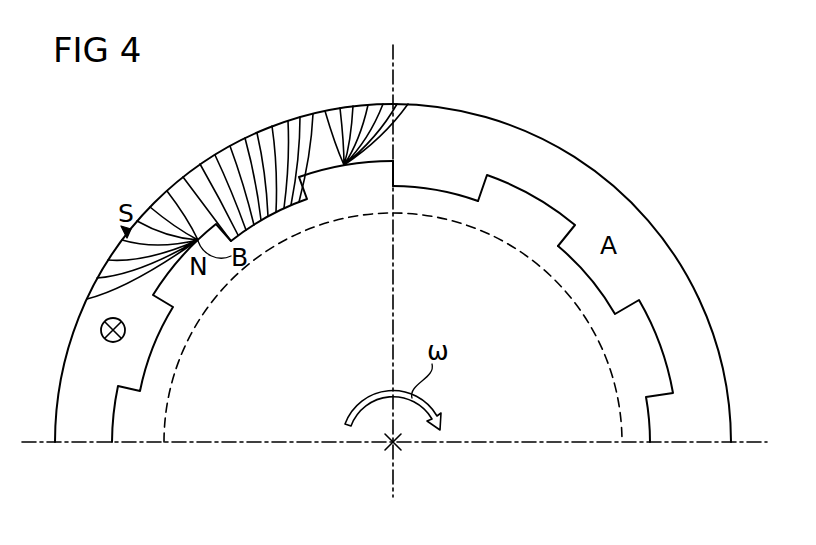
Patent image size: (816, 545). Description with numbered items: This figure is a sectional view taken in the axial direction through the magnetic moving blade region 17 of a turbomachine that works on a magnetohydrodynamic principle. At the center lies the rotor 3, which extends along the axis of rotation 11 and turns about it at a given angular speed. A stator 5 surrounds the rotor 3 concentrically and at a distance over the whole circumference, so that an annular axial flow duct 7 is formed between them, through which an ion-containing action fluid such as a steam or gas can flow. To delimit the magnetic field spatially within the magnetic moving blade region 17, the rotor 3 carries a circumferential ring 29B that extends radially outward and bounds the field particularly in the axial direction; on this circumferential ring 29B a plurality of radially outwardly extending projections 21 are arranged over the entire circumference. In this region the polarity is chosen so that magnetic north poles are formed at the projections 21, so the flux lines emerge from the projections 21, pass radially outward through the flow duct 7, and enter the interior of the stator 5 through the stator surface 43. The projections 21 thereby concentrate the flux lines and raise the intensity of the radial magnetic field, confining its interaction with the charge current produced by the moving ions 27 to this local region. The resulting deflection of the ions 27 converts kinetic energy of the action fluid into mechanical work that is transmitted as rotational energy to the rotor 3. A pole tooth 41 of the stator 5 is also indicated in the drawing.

The magnetic moving blade region 17 is at (331, 76).
The stator 5 is at (657, 232).
The annular axial flow duct 7 is at (722, 418).
The radially outwardly extending projections 21 is at (352, 164).
The pole tooth 41 is at (443, 188).
The stator surface 43 is at (678, 268).
The ions 27 is at (110, 343).
The axis of rotation 11 is at (392, 455).
The rotor 3 is at (562, 443).
The circumferential ring 29B is at (622, 444).